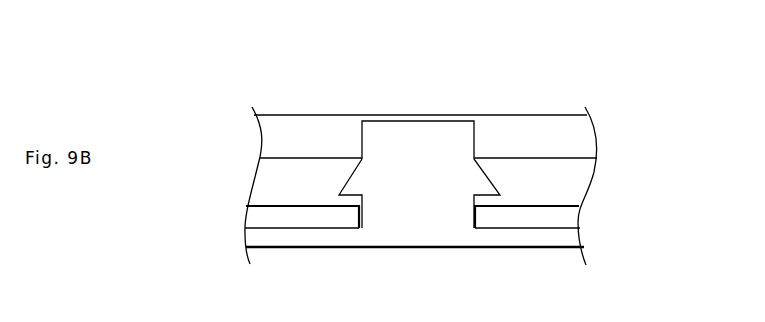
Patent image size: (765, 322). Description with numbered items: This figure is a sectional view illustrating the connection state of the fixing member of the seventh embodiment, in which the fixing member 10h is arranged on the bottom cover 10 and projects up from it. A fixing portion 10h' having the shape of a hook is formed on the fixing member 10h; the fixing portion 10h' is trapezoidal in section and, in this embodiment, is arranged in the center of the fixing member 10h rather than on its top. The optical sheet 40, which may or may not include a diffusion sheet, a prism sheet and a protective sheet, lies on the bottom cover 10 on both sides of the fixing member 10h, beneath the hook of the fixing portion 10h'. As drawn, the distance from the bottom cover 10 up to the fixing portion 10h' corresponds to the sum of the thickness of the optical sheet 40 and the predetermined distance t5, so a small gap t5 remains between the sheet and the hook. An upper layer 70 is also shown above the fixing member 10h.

The bottom cover 10 is at (420, 237).
The fixing member 10h is at (511, 133).
The fixing portion 10h' is at (335, 122).
The optical sheet 40 is at (575, 218).
The insulating layer 70 is at (590, 151).
The predetermined distance t5 is at (332, 195).